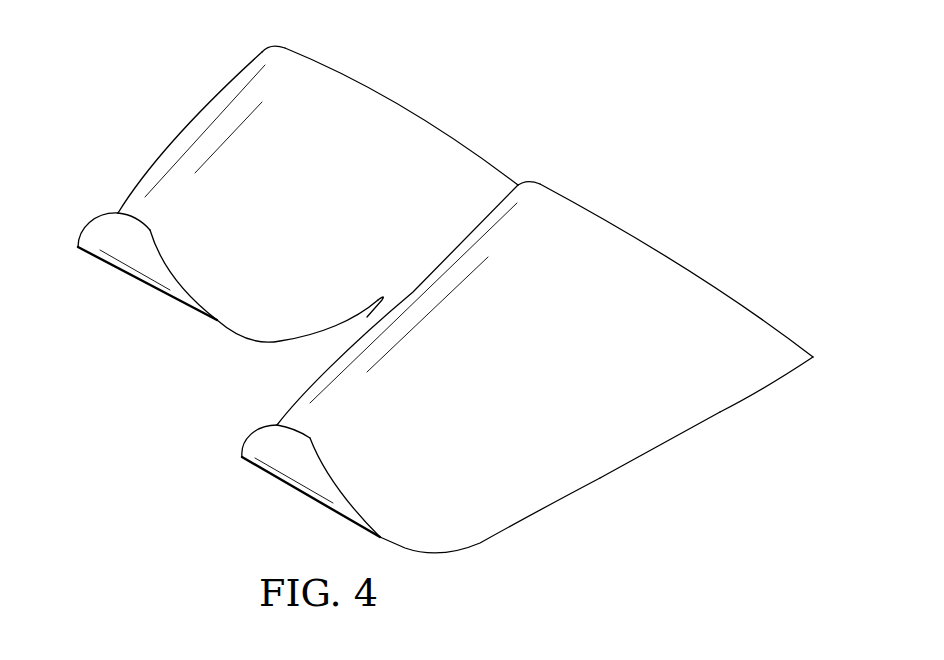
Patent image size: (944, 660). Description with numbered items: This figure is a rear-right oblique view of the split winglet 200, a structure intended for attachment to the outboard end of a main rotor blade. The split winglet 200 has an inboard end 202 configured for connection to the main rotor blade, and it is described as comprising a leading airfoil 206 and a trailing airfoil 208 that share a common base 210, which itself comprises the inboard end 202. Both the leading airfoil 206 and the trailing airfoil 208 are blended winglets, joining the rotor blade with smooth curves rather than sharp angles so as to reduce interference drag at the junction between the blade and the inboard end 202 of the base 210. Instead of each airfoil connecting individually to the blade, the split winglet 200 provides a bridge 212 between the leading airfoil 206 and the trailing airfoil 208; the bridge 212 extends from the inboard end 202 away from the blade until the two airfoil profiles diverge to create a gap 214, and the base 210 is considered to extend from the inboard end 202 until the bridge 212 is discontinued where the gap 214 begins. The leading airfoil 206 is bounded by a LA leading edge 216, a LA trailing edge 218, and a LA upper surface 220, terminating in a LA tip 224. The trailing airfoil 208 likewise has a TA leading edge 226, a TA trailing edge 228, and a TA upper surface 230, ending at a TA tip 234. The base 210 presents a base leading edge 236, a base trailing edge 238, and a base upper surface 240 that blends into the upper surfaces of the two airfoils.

The split winglet 200 is at (598, 90).
The inboard end 202 is at (623, 222).
The leading airfoil 206 is at (182, 131).
The trailing airfoil 208 is at (519, 530).
The base 210 is at (692, 264).
The bridge 212 is at (468, 218).
The gap 214 is at (358, 318).
The LA leading edge 216 is at (148, 171).
The LA trailing edge 218 is at (277, 344).
The LA upper surface 220 is at (179, 279).
The LA tip 224 is at (152, 229).
The TA leading edge 226 is at (288, 407).
The TA trailing edge 228 is at (648, 452).
The TA upper surface 230 is at (342, 490).
The TA tip 234 is at (311, 438).
The base leading edge 236 is at (250, 65).
The base trailing edge 238 is at (753, 392).
The base upper surface 240 is at (362, 97).